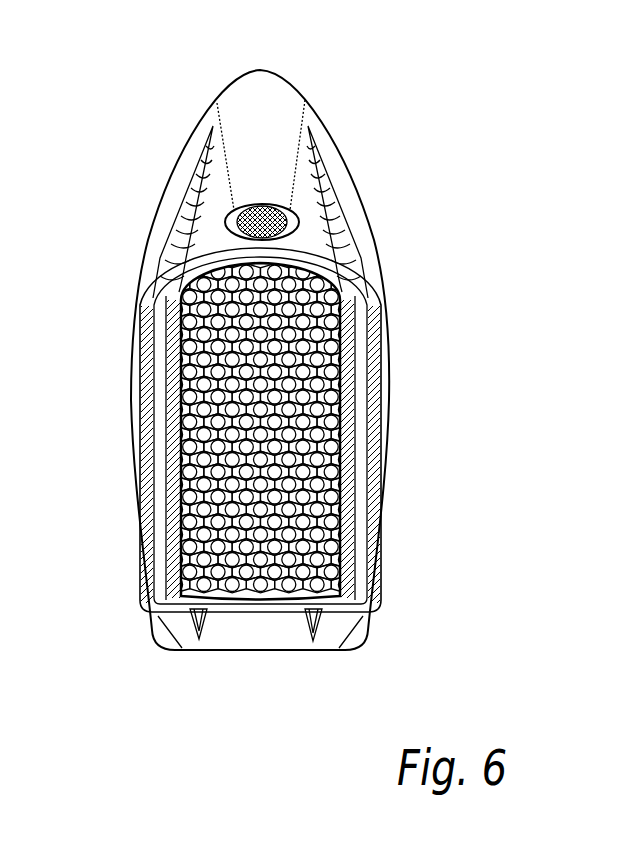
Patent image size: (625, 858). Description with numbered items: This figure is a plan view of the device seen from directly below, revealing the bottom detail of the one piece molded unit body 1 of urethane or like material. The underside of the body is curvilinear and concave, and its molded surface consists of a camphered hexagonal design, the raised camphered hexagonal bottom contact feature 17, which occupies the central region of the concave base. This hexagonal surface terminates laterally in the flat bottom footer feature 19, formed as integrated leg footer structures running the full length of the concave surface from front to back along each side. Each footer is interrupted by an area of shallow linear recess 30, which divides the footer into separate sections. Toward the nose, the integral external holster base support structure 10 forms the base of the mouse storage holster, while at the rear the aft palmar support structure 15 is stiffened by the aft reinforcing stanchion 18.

The one piece molded unit body 1 is at (265, 147).
The integral external holster base support structure 10 is at (177, 220).
The aft palmar support structure 15 is at (248, 627).
The raised camphered hexagonal bottom contact feature 17 is at (222, 452).
The aft reinforcing stanchion 18 is at (197, 627).
The flat bottom footer feature 19 is at (170, 355).
The area of shallow linear recess in the footer 30 is at (162, 455).